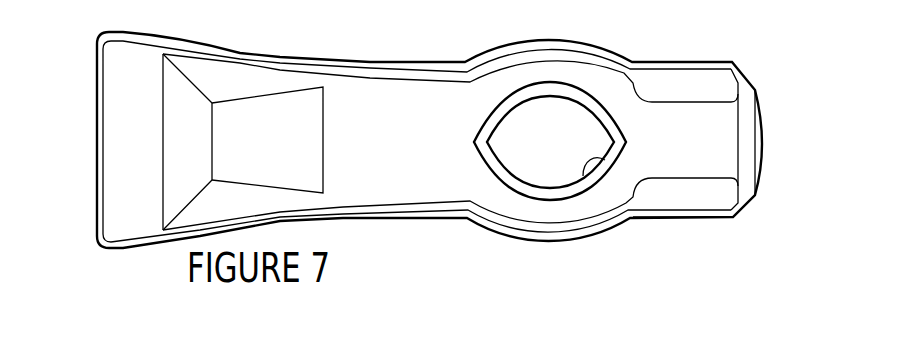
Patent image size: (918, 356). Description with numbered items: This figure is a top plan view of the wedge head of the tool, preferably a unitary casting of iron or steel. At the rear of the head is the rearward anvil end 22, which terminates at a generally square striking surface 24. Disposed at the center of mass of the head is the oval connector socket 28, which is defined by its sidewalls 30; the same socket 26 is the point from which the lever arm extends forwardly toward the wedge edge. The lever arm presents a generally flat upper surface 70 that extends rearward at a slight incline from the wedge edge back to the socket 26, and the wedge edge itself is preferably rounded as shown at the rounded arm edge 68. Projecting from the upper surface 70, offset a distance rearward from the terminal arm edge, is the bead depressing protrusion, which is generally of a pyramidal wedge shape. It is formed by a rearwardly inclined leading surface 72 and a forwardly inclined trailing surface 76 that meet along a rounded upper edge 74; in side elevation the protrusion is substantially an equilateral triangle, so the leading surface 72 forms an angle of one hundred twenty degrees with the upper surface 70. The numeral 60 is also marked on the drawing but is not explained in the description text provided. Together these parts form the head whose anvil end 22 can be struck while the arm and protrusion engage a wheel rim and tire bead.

The rearward anvil end 22 is at (706, 220).
The striking surface 24 is at (762, 143).
The socket 26 is at (593, 236).
The oval connector socket 28 is at (545, 158).
The sidewalls 30 is at (605, 159).
The fastener 60 is at (609, 4).
The rounded arm edge 68 is at (96, 142).
The upper surface 70 is at (402, 168).
The leading surface 72 is at (182, 90).
The rounded upper edge 74 is at (212, 120).
The trailing surface 76 is at (285, 135).